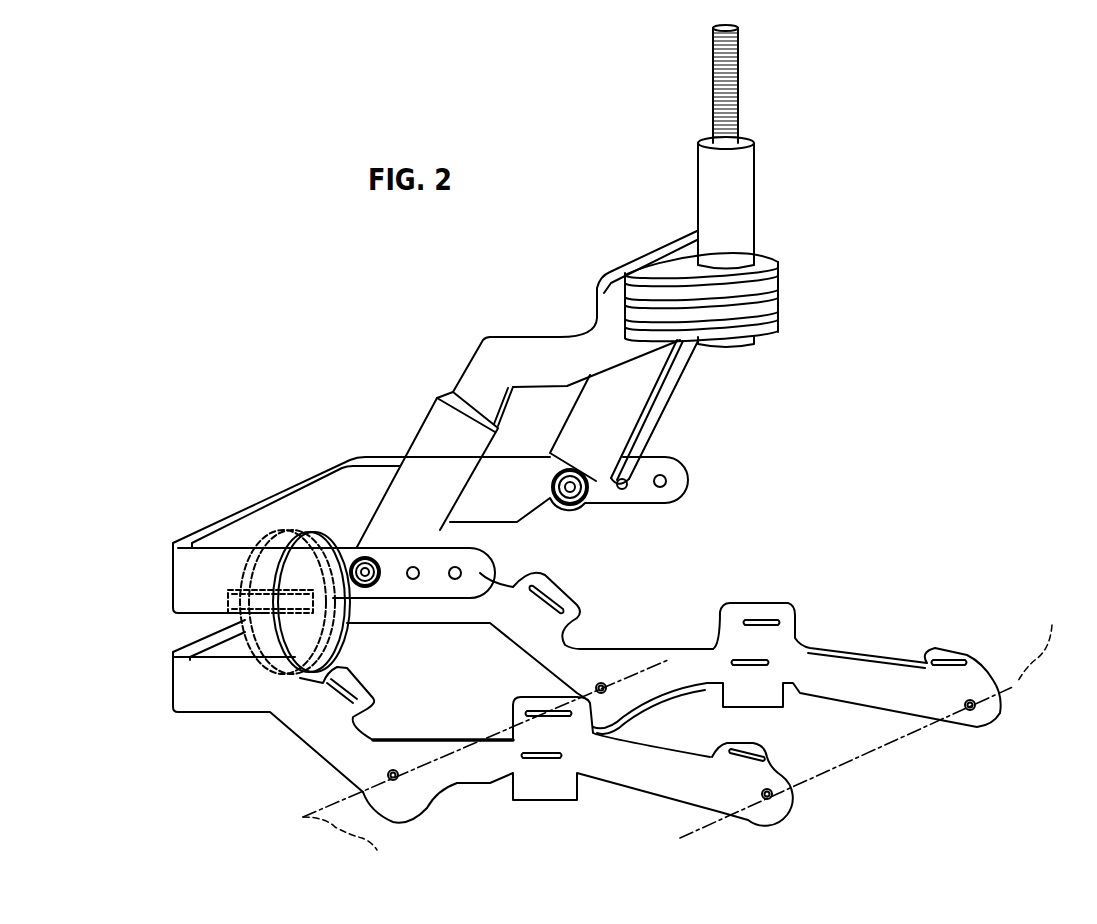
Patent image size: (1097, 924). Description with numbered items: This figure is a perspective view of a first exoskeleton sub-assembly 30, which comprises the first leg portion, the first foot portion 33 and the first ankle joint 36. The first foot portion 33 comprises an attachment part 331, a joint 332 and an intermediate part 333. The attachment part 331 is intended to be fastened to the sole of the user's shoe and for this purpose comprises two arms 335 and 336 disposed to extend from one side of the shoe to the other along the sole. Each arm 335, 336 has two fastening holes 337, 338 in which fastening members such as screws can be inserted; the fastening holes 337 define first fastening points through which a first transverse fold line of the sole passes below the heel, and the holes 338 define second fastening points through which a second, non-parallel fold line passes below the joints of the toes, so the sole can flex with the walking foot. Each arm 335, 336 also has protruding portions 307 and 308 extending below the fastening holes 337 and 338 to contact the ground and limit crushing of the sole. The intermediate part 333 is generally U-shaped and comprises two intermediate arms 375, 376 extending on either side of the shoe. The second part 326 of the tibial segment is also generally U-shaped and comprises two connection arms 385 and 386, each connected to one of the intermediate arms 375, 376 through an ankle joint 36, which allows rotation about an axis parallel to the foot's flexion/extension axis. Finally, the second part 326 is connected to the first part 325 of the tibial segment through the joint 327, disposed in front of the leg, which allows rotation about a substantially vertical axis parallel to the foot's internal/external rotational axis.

The first exoskeleton sub-assembly 30 is at (272, 314).
The first foot portion 33 is at (128, 632).
The ankle joint 36 is at (575, 512).
The protruding portion 307 is at (393, 818).
The protruding portion 308 is at (987, 730).
The first part of the tibial segment 325 is at (745, 79).
The second part of the tibial segment 326 is at (586, 318).
The joint 327 is at (760, 197).
The attachment part 331 is at (308, 745).
The joint 332 is at (225, 600).
The intermediate part 333 is at (275, 500).
The arm 335 is at (473, 768).
The arm 336 is at (848, 705).
The fastening hole 337 is at (601, 683).
The fastening hole 338 is at (970, 709).
The intermediate arm 375 is at (322, 577).
The intermediate arm 376 is at (527, 474).
The connection arm 385 is at (464, 372).
The connection arm 386 is at (738, 430).